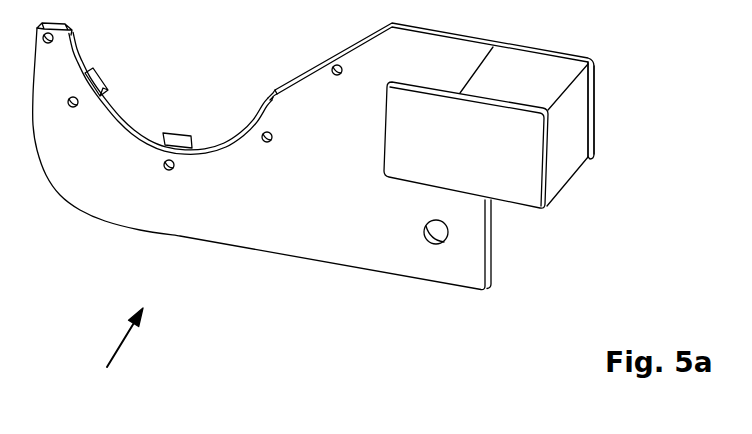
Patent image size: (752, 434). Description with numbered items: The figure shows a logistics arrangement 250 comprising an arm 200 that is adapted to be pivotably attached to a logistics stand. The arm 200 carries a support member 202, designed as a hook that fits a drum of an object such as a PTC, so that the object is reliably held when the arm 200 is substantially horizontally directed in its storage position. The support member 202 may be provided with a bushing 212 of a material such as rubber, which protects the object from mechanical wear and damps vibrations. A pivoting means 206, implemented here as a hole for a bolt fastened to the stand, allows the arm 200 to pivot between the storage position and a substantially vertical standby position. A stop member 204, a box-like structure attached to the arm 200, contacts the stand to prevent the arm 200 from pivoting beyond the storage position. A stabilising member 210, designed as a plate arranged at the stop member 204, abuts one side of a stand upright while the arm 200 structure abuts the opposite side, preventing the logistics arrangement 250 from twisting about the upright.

The arm 200 is at (270, 233).
The support member 202 is at (103, 152).
The stop member 204 is at (539, 167).
The pivoting means 206 is at (436, 235).
The stabilising member 210 is at (530, 188).
The bushing 212 is at (103, 90).
The logistics arrangement 250 is at (105, 360).